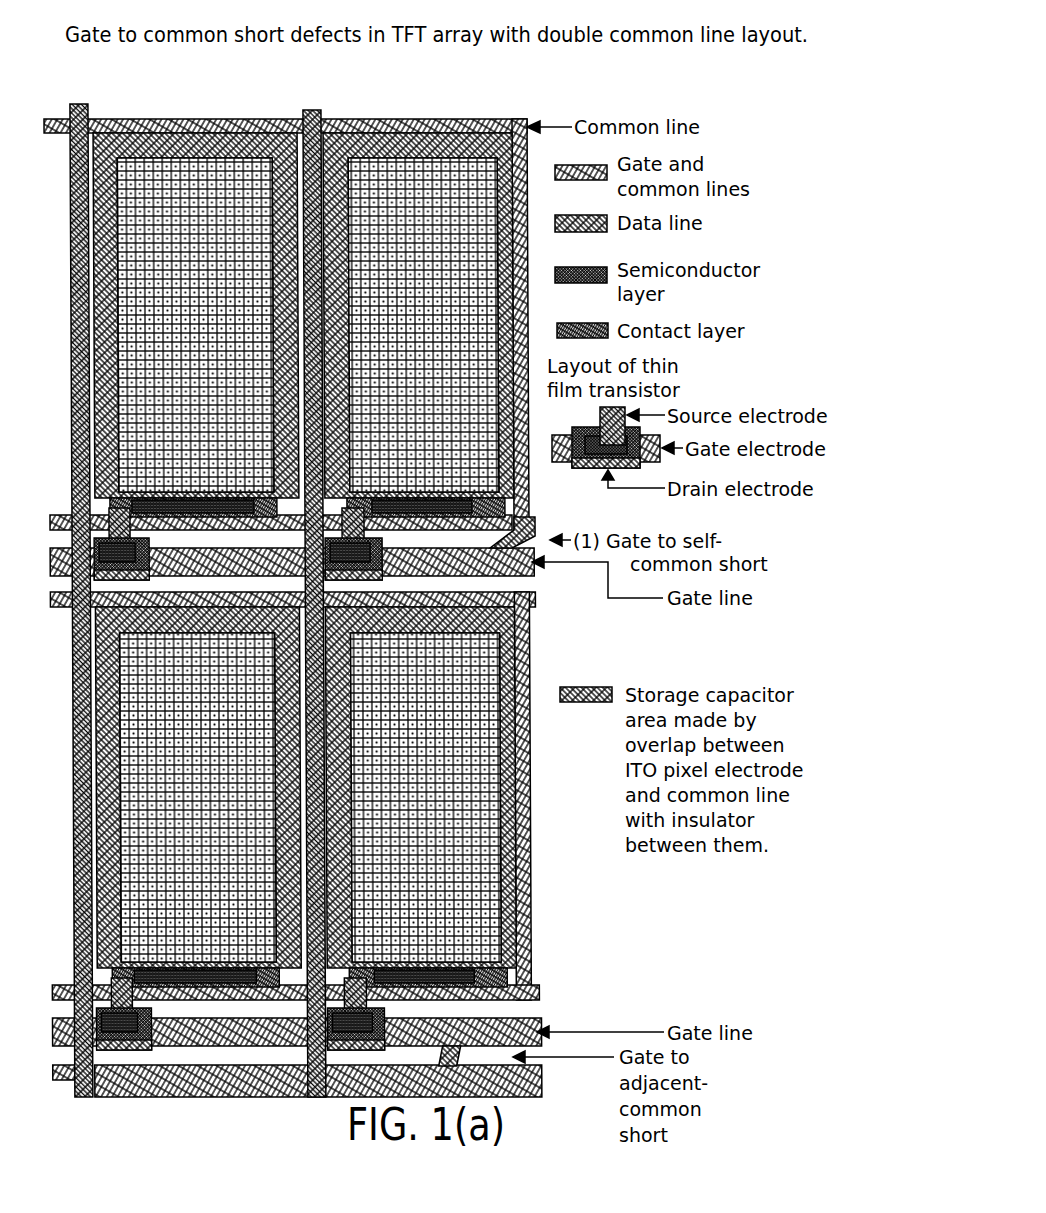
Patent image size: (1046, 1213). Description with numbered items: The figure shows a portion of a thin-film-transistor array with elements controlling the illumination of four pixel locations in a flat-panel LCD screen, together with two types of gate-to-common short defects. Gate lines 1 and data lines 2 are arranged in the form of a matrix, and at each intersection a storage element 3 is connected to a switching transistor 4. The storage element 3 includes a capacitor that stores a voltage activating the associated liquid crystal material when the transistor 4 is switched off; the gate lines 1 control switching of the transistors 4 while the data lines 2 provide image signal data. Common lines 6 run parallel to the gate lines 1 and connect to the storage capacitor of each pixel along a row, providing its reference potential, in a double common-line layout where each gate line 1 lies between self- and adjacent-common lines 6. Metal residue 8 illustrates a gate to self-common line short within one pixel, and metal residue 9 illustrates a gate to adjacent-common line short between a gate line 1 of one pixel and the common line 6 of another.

The gate line 1 is at (532, 577).
The data line 2 is at (75, 104).
The storage element 3 is at (530, 512).
The switching transistor 4 is at (363, 543).
The common line 6 is at (525, 119).
The metal residue 8 is at (513, 540).
The metal residue 9 is at (453, 1056).